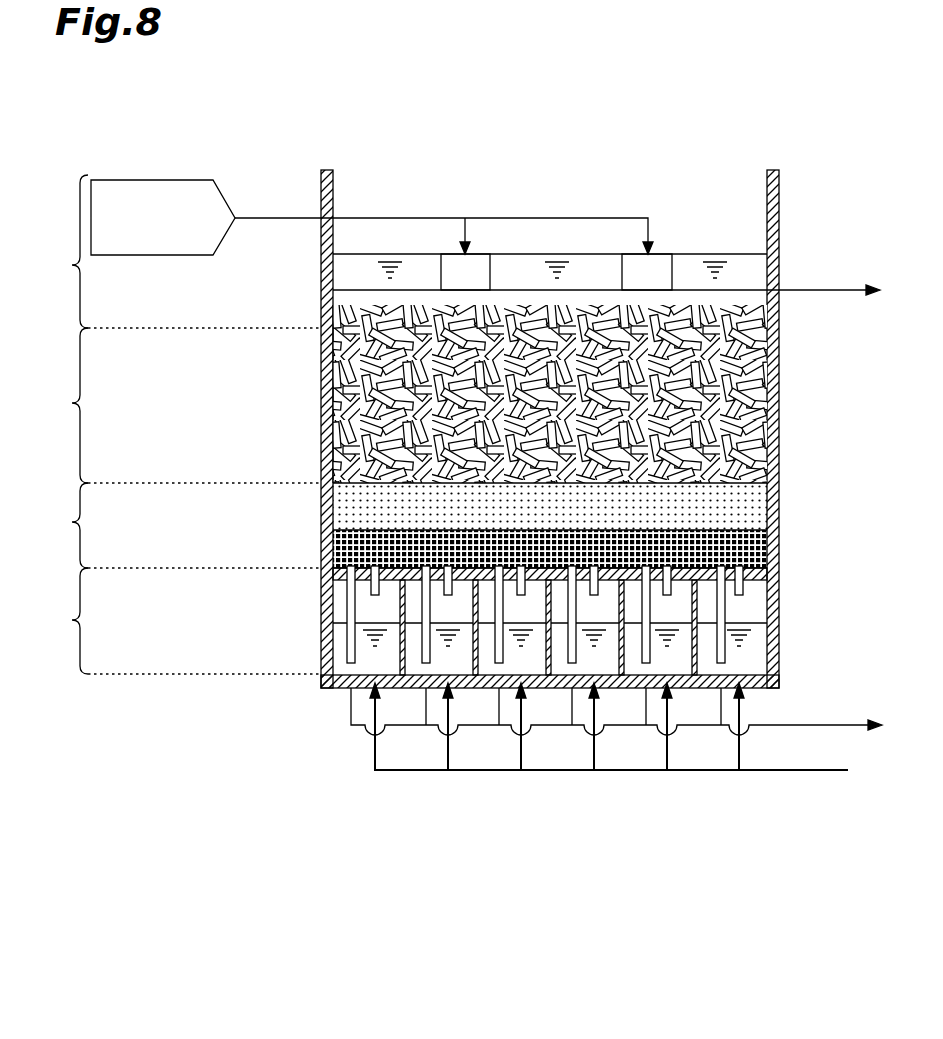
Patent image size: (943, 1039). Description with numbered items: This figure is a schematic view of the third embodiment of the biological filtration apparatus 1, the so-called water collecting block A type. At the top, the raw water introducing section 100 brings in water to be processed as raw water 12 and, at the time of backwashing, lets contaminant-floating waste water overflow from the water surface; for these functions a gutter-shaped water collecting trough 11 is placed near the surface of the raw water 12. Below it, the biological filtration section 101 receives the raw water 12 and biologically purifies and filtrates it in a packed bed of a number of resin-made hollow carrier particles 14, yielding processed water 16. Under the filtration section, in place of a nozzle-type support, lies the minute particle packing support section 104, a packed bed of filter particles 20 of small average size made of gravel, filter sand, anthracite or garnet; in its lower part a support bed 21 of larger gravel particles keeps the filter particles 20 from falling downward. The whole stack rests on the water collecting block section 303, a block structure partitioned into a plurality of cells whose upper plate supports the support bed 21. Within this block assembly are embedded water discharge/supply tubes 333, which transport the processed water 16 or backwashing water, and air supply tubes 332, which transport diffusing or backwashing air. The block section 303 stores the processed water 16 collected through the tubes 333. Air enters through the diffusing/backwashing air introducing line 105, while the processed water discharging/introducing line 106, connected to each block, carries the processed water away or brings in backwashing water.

The biological filtration apparatus 1 is at (790, 392).
The water collecting trough 11 is at (455, 278).
The raw water 12 is at (321, 323).
The hollow carrier particles 14 is at (321, 443).
The processed water 16 is at (364, 662).
The filter particles 20 is at (752, 508).
The support bed 21 is at (765, 545).
The raw water introducing section 100 is at (398, 251).
The biological filtration section 101 is at (175, 405).
The minute particle packing support section 104 is at (170, 525).
The diffusing/backwashing air introducing line 105 is at (783, 770).
The processed water discharging/introducing line 106 is at (815, 725).
The water collecting block section 303 is at (392, 621).
The air supply tubes 332 is at (371, 588).
The water discharge/supply tubes 333 is at (338, 650).